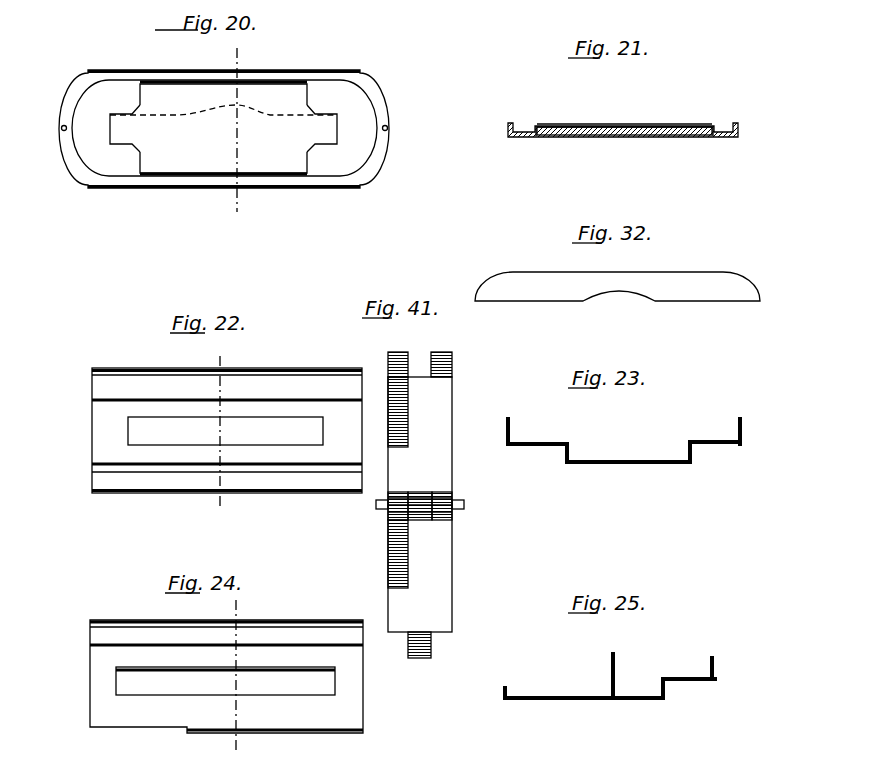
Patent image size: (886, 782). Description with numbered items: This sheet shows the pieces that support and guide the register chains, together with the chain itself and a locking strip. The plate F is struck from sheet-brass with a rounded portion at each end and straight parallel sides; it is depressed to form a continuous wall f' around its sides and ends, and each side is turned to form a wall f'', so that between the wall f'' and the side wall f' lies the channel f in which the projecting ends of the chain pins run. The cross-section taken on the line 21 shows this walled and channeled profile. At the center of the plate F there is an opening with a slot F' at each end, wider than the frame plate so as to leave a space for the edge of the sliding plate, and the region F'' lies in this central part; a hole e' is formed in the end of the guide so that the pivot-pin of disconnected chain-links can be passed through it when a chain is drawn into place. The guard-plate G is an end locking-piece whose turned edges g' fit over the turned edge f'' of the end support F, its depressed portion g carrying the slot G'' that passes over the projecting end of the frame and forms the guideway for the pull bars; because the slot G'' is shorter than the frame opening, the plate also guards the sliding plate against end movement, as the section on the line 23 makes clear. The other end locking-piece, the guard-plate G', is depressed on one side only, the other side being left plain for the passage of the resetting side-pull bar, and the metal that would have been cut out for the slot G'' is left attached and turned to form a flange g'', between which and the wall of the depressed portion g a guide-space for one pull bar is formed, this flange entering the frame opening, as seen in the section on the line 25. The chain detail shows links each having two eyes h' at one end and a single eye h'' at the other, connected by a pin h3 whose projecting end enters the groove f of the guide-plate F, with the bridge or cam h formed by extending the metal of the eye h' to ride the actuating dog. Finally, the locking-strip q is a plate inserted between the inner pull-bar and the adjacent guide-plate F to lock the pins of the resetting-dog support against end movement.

In FIG. 20, the plate F is at (224, 116).
In FIG. 21, the plate F is at (624, 144).
In FIG. 20, the channel f is at (237, 133).
In FIG. 21, the channel f is at (630, 116).
In FIG. 20, the continuous wall f' is at (227, 130).
In FIG. 21, the continuous wall f' is at (628, 114).
In FIG. 20, the turned wall f'' is at (224, 200).
In FIG. 21, the turned wall f'' is at (624, 124).
In FIG. 20, the hole e' is at (224, 134).
In FIG. 20, the locking-plate q is at (223, 102).
In FIG. 32, the locking-plate q is at (617, 286).
In FIG. 20, the slot F' is at (223, 128).
In FIG. 21, the slot F' is at (588, 113).
In FIG. 20, the central plate F'' is at (223, 128).
In FIG. 21, the central plate F'' is at (676, 110).
In FIG. 20, the section line 21 is at (235, 131).
In FIG. 22, the guard-plate G is at (227, 419).
In FIG. 23, the guard-plate G is at (537, 430).
In FIG. 22, the depressed portion g is at (227, 436).
In FIG. 23, the depressed portion g is at (654, 452).
In FIG. 24, the depressed portion g is at (226, 658).
In FIG. 25, the depressed portion g is at (677, 687).
In FIG. 22, the turned edge g' is at (227, 432).
In FIG. 23, the turned edge g' is at (621, 431).
In FIG. 24, the turned edge g' is at (226, 680).
In FIG. 25, the turned edge g' is at (608, 678).
In FIG. 24, the flange g'' is at (257, 656).
In FIG. 25, the flange g'' is at (631, 676).
In FIG. 24, the guard-plate G' is at (226, 665).
In FIG. 25, the guard-plate G' is at (541, 683).
In FIG. 22, the slot G'' is at (225, 431).
In FIG. 23, the slot G'' is at (628, 476).
In FIG. 24, the slot G'' is at (225, 681).
In FIG. 25, the slot G'' is at (621, 714).
In FIG. 22, the section line 23 is at (219, 433).
In FIG. 24, the section line 25 is at (234, 679).
In FIG. 41, the bridge or cam h is at (420, 504).
In FIG. 41, the eye h' is at (420, 433).
In FIG. 41, the single eye h'' is at (425, 573).
In FIG. 41, the pin h3 is at (455, 499).